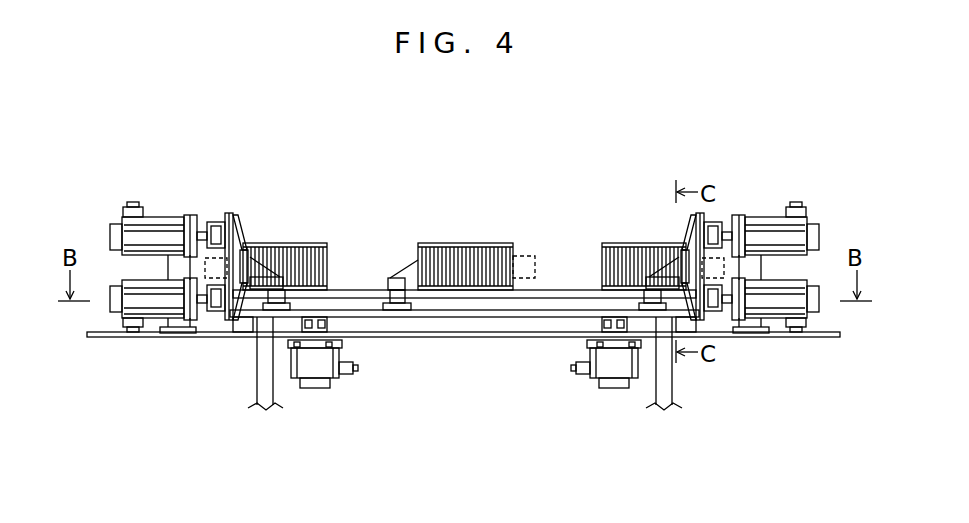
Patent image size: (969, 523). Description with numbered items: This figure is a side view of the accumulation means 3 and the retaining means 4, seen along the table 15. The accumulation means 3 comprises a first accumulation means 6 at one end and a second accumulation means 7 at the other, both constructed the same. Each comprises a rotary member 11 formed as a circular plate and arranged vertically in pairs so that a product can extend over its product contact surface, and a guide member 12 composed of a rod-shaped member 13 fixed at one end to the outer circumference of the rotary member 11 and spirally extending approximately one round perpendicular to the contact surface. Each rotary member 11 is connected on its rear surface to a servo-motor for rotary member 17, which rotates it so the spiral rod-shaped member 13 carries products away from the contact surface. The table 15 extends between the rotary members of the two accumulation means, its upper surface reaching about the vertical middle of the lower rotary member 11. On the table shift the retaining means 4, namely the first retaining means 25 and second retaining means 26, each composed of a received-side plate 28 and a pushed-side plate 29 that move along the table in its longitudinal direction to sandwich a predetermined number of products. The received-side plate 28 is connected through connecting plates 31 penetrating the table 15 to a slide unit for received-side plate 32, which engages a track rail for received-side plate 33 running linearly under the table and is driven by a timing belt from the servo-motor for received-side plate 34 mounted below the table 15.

The accumulation means 3 is at (461, 216).
The roller support 4 is at (464, 212).
The first accumulation means 6 is at (211, 266).
The second accumulation means 7 is at (718, 266).
The rotary member 11 is at (226, 216).
The guide member 12 is at (465, 291).
The rod-shaped member 13 is at (240, 216).
The table 15 is at (530, 300).
The servo-motor for rotary member 17 is at (128, 224).
The first retaining means 25 is at (266, 273).
The second retaining means 26 is at (662, 273).
The received-side plate 28 is at (252, 243).
The pushed-side plate 29 is at (205, 270).
The connecting plate 31 is at (288, 297).
The slide unit for received-side plate 32 is at (656, 380).
The track rail for received-side plate 33 is at (485, 318).
The servo-motor for received-side plate 34 is at (338, 382).